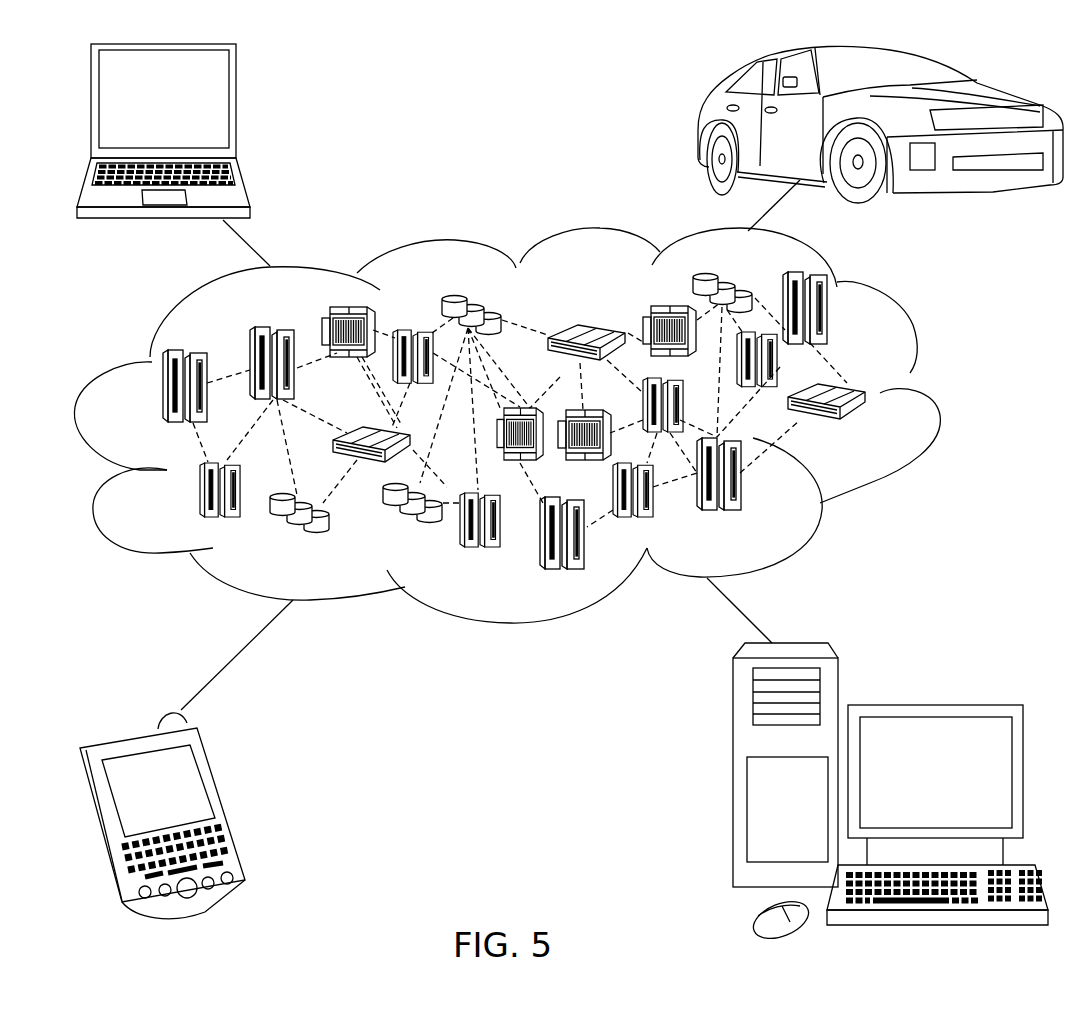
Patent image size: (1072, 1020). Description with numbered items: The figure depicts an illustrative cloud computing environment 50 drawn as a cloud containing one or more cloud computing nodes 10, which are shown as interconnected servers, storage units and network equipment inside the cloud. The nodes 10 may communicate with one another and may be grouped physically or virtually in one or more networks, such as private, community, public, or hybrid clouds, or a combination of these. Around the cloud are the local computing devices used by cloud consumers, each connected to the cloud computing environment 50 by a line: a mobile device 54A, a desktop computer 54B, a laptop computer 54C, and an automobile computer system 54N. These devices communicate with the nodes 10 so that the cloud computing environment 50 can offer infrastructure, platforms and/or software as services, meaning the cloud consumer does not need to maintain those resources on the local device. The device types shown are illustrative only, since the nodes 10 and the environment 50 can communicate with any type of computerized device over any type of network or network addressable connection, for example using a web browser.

The laptop computer 54C is at (237, 108).
The automobile computer system 54N is at (698, 128).
The mobile device 54A is at (227, 802).
The desktop computer 54B is at (933, 705).
The cloud computing environment 50 is at (933, 398).
The cloud computing node 10 is at (872, 430).